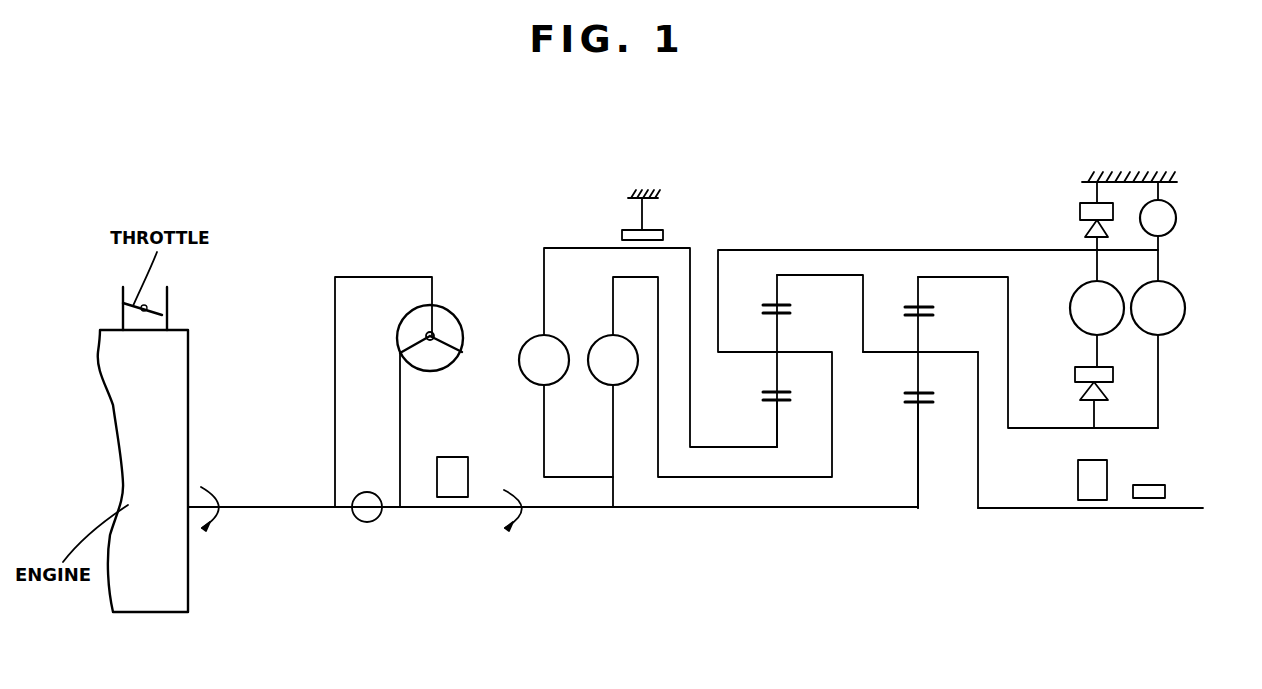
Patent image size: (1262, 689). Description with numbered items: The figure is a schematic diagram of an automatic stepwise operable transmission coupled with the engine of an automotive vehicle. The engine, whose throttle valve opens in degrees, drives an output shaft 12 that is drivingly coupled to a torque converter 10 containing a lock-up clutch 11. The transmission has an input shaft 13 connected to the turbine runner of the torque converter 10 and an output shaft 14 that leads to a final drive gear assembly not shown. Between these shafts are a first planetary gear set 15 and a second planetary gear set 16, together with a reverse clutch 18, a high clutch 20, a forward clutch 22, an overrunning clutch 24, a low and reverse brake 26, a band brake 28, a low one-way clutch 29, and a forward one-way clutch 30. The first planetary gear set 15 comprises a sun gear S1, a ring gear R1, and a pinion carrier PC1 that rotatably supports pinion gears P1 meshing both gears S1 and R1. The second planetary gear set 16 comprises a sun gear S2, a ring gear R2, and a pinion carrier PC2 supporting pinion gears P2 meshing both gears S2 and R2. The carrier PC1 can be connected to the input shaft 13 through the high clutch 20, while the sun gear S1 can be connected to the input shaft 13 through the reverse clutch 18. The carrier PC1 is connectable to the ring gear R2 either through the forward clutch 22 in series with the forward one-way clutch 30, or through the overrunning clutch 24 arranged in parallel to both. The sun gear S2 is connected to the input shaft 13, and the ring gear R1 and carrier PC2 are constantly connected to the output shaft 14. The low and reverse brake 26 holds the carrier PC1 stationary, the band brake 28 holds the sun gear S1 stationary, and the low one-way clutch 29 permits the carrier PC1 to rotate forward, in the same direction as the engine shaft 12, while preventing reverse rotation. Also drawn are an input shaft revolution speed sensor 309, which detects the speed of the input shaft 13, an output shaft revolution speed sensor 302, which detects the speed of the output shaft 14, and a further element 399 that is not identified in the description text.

The torque converter 10 is at (458, 298).
The lock-up clutch 11 is at (370, 522).
The output shaft of engine 12 is at (290, 505).
The input shaft 13 is at (465, 510).
The output shaft 14 is at (1032, 507).
The first planetary gear set 15 is at (839, 344).
The second planetary gear set 16 is at (1003, 363).
The reverse clutch 18 is at (522, 378).
The high clutch 20 is at (597, 387).
The forward clutch 22 is at (1073, 325).
The overrunning clutch 24 is at (1187, 305).
The low & reverse brake 26 is at (1183, 212).
The band brake 28 is at (647, 217).
The low one-way clutch 29 is at (1080, 213).
The forward one-way clutch 30 is at (1075, 377).
The output shaft revolution speed sensor 302 is at (1108, 482).
The input shaft revolution speed sensor 309 is at (448, 457).
The sensor 399 is at (1167, 493).
The ring gear R1 is at (778, 287).
The pinion carrier PC1 is at (807, 351).
The pinion gears P1 is at (772, 382).
The sun gear S1 is at (777, 435).
The ring gear R2 is at (922, 287).
The pinion carrier PC2 is at (950, 352).
The pinion gears P2 is at (917, 373).
The sun gear S2 is at (918, 483).